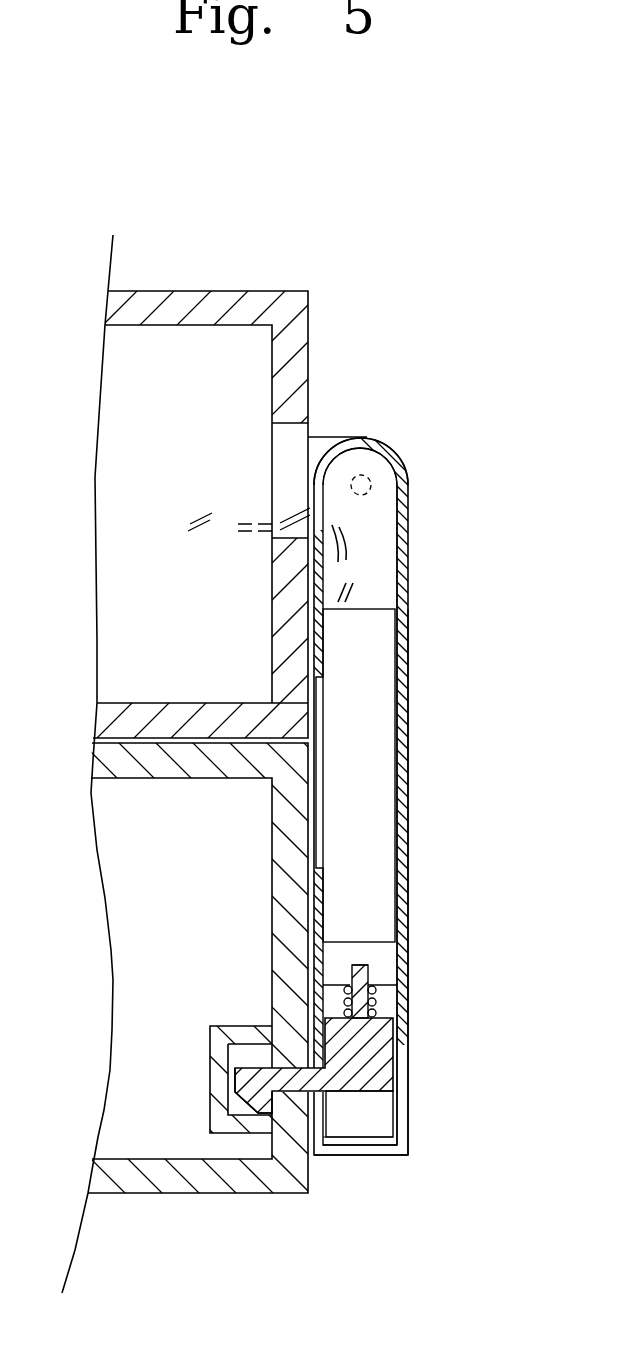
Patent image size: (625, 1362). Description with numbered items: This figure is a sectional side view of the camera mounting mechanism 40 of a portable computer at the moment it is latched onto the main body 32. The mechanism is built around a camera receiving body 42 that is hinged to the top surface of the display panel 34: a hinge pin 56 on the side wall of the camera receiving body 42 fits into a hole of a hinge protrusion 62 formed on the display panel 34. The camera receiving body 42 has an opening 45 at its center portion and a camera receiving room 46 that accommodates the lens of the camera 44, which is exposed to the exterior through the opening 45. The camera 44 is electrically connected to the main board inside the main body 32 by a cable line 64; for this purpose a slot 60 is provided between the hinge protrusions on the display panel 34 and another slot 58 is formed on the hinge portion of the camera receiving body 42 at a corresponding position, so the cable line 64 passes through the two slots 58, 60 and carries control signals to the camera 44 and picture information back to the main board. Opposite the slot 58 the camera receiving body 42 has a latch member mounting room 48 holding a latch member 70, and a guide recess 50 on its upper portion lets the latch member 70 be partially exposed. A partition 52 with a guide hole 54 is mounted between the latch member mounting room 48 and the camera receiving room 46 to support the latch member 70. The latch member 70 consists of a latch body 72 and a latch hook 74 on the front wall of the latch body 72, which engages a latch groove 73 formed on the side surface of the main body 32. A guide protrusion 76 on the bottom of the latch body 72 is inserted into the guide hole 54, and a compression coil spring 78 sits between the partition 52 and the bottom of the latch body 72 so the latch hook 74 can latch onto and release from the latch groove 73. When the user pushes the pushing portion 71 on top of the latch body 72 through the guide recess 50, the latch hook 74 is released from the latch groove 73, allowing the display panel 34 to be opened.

The main body 32 is at (180, 1195).
The display panel 34 is at (305, 334).
The camera mounting mechanism 40 is at (430, 654).
The camera receiving body 42 is at (403, 827).
The camera 44 is at (378, 768).
The opening 45 is at (313, 672).
The camera receiving room 46 is at (388, 578).
The latch member mounting room 48 is at (393, 1143).
The guide recess 50 is at (403, 1078).
The partition 52 is at (345, 982).
The guide hole 54 is at (385, 978).
The hinge pin 56 is at (372, 485).
The slot 58 is at (367, 438).
The slot 60 is at (286, 476).
The hinge protrusion 62 is at (318, 437).
The cable line 64 is at (350, 553).
The latch member 70 is at (362, 1108).
The pushing portion 71 is at (388, 1110).
The latch body 72 is at (385, 1055).
The latch groove 73 is at (237, 1050).
The latch hook 74 is at (240, 1082).
The guide protrusion 76 is at (362, 965).
The compression coil spring 78 is at (347, 1002).